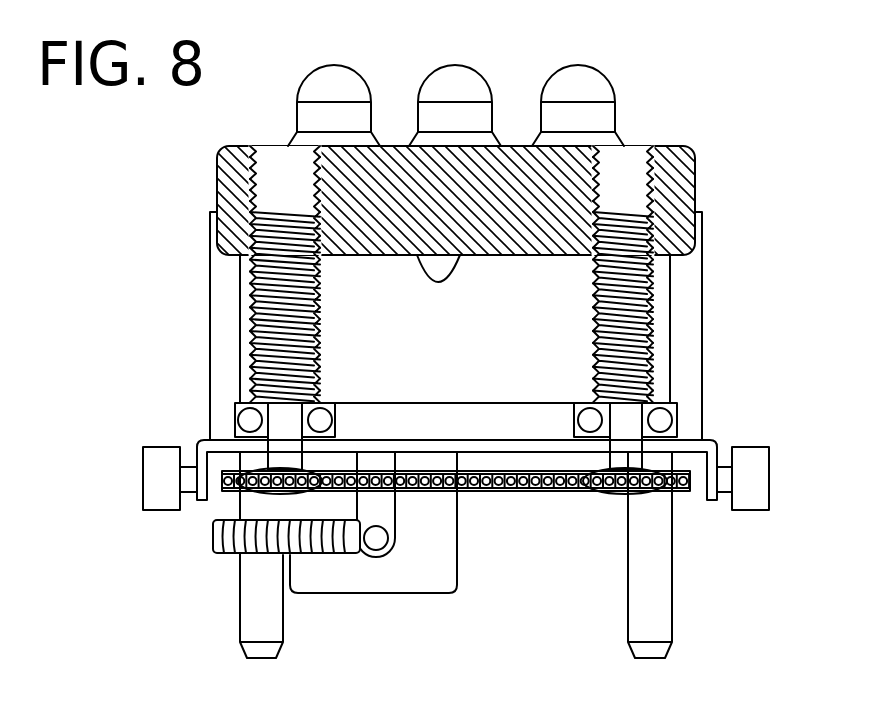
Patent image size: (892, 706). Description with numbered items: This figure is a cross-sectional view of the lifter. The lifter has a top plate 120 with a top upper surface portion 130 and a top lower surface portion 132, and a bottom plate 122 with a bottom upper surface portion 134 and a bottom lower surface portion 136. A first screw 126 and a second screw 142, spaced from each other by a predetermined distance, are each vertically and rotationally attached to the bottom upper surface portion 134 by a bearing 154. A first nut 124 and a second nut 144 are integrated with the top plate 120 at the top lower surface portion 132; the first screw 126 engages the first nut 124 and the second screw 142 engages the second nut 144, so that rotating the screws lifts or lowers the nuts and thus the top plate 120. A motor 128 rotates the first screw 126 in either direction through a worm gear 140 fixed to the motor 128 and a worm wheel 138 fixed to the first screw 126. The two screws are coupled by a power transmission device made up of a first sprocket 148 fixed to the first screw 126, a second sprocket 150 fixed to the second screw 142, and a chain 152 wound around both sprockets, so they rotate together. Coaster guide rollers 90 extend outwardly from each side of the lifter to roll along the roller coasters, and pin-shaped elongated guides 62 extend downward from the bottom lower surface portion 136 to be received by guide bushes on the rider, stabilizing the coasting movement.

The elongated guides 62 is at (248, 622).
The coaster guide rollers 90 is at (161, 505).
The top plate 120 is at (690, 148).
The bottom plate 122 is at (688, 445).
The first nut 124 is at (272, 172).
The first screw 126 is at (250, 300).
The motor 128 is at (425, 595).
The top upper surface portion 130 is at (520, 146).
The top lower surface portion 132 is at (411, 255).
The bottom upper surface portion 134 is at (515, 437).
The bottom lower surface portion 136 is at (483, 452).
The worm wheel 138 is at (315, 557).
The worm gear 140 is at (377, 560).
The second screw 142 is at (665, 297).
The second nut 144 is at (597, 175).
The first sprocket 148 is at (283, 497).
The second sprocket 150 is at (627, 497).
The chain 152 is at (547, 490).
The bearing 154 is at (237, 403).